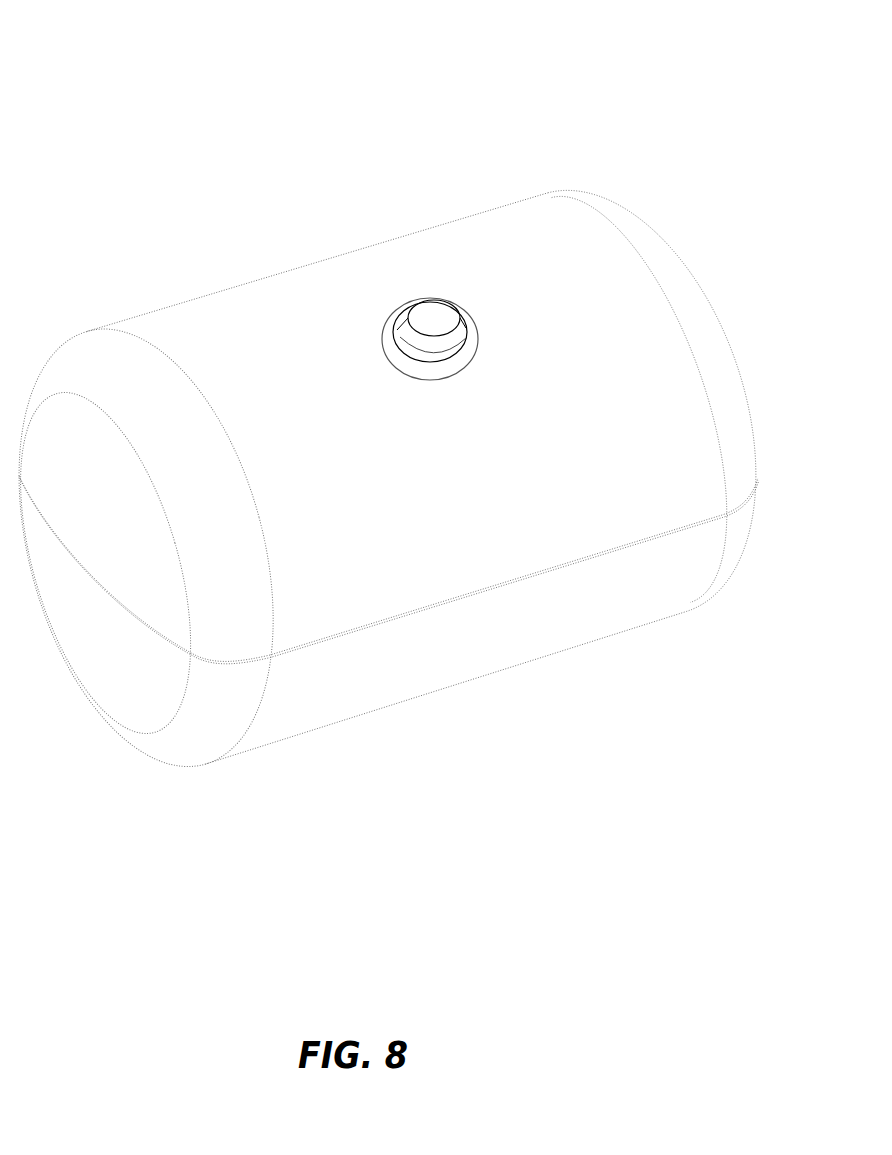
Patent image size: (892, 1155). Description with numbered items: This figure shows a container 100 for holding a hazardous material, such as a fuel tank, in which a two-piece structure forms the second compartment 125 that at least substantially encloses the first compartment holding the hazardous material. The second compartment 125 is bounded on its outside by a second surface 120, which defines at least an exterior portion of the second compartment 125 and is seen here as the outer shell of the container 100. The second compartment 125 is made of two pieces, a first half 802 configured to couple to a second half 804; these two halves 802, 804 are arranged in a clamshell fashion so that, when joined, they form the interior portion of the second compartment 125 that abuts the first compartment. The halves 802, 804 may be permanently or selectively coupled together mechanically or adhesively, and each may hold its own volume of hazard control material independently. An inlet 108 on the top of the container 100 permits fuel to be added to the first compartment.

The container 100 is at (285, 123).
The inlet 108 is at (437, 310).
The second surface 120 is at (307, 305).
The second compartment 125 is at (188, 323).
The first half 802 is at (680, 378).
The second half 804 is at (645, 622).